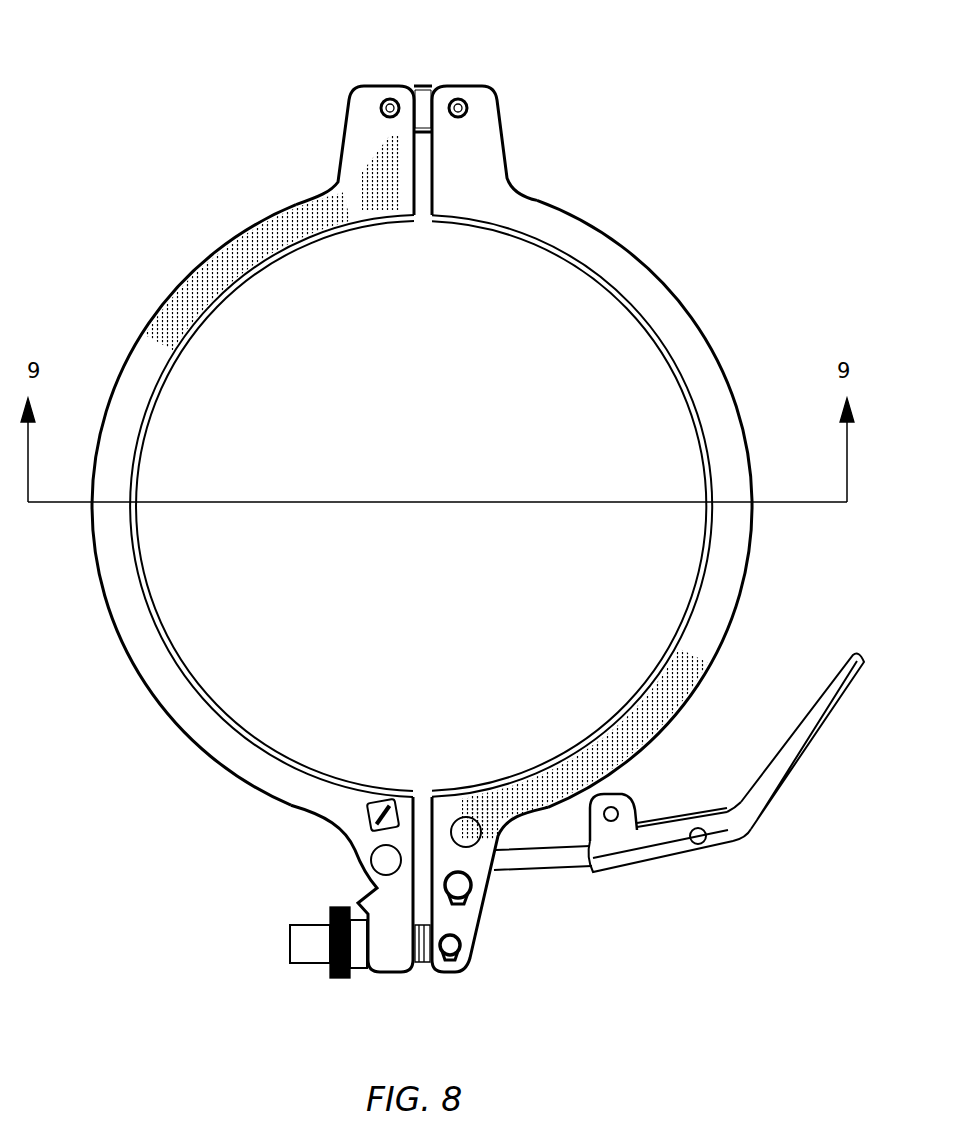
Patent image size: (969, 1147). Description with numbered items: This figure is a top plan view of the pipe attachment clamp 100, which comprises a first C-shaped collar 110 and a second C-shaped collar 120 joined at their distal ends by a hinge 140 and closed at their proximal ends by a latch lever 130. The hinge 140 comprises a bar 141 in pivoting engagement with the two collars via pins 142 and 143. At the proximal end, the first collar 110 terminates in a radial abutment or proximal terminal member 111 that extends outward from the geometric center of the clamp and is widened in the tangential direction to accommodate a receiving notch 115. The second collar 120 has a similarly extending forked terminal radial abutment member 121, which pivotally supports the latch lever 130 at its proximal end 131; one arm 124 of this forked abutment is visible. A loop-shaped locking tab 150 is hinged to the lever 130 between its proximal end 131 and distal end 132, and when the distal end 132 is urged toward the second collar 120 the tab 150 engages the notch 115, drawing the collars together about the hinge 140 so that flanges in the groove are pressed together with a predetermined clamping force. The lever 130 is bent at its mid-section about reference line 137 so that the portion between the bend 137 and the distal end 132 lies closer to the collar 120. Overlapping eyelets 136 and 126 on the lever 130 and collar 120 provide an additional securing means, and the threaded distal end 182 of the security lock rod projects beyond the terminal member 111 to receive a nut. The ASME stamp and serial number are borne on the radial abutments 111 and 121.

The pipe attachment clamp 100 is at (176, 170).
The first C-shaped collar 110 is at (153, 345).
The proximal terminal member 111 is at (386, 957).
The receiving notch 115 is at (340, 868).
The second C-shaped collar 120 is at (655, 300).
The terminal radial abutment member 121 is at (477, 917).
The arm 124 is at (533, 963).
The eyelet 126 is at (617, 773).
The latch lever 130 is at (770, 930).
The proximal end of lever 131 is at (615, 875).
The distal end of lever 132 is at (846, 683).
The eyelet 136 is at (630, 800).
The reference line 137 is at (755, 830).
The hinge 140 is at (560, 98).
The bar 141 is at (425, 95).
The pin 142 is at (385, 100).
The pin 143 is at (470, 102).
The locking tab 150 is at (503, 890).
The distal end of rod 182 is at (305, 940).